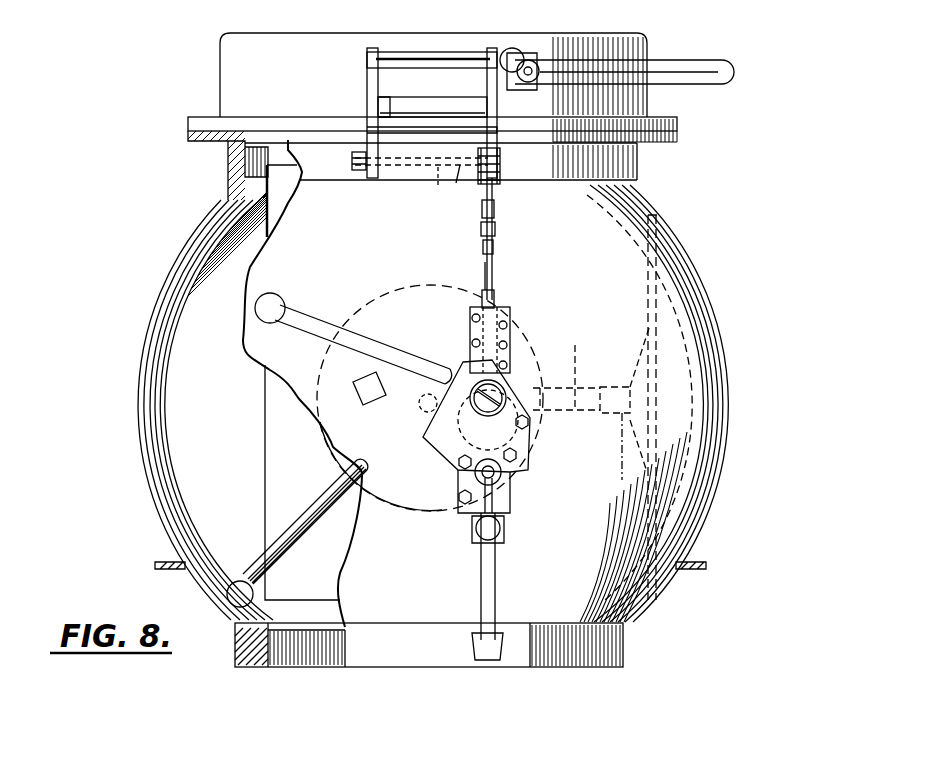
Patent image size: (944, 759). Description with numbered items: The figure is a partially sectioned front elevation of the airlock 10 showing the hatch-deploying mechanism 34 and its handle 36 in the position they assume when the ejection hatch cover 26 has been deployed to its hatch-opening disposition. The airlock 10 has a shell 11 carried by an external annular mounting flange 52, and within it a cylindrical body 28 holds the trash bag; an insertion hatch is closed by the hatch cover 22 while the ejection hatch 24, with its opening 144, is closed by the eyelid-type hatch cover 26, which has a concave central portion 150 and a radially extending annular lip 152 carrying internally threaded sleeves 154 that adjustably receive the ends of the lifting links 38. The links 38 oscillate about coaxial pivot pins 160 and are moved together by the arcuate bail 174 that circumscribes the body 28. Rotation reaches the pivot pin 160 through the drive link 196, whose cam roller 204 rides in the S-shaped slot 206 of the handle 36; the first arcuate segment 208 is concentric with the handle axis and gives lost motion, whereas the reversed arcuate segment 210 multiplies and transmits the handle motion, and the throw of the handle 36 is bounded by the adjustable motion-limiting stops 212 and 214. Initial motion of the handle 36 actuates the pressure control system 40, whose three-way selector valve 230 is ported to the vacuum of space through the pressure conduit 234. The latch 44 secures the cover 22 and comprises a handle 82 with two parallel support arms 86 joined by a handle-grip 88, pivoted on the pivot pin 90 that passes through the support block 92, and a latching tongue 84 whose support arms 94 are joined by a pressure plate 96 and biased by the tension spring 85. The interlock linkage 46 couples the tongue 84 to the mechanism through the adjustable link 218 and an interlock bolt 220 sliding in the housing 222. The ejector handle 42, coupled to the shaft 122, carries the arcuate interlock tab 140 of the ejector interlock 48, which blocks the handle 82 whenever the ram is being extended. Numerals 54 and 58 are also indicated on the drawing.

The airlock 10 is at (188, 232).
The shell 11 is at (162, 268).
The hatch cover 22 is at (236, 66).
The ejection hatch 24 is at (326, 670).
The hatch cover 26 is at (703, 270).
The cylindrical body 28 is at (264, 447).
The hatch-deployment mechanism 34 is at (432, 337).
The handle 36 is at (312, 318).
The lifting links 38 is at (593, 369).
The pressure control system 40 is at (536, 425).
The ejector handle 42 is at (688, 85).
The latch 44 is at (363, 63).
The interlock linkage 46 is at (496, 248).
The ejector interlock 48 is at (520, 55).
The mounting flange 52 is at (692, 566).
The gasket 54 is at (213, 140).
The flange 58 is at (205, 122).
The handle 82 is at (372, 46).
The latching tongue 84 is at (388, 98).
The tension spring 85 is at (503, 160).
The support arms 86 is at (365, 99).
The handle-grip 88 is at (445, 60).
The pivot pin 90 is at (440, 186).
The support block 92 is at (460, 186).
The support arms 94 is at (372, 157).
The pressure plate 96 is at (445, 106).
The shaft 122 is at (531, 70).
The interlock tab 140 is at (513, 48).
The opening 144 is at (272, 668).
The concave central portion 150 is at (705, 297).
The annular lip 152 is at (646, 292).
The internally threaded sleeves 154 is at (624, 402).
The pivot pins 160 is at (418, 405).
The arcuate bail 174 is at (238, 583).
The drive link 196 is at (327, 400).
The cam roller 204 is at (372, 321).
The slot 206 is at (455, 486).
The first arcuate segment 208 is at (439, 495).
The reversed arcuate segment 210 is at (439, 352).
The motion-limiting stop 212 is at (335, 360).
The motion-limiting stop 214 is at (535, 386).
The adjustable link 218 is at (484, 262).
The interlock bolt 220 is at (493, 309).
The housing 222 is at (500, 342).
The three-way selector valve 230 is at (532, 474).
The pressure conduit 234 is at (480, 600).